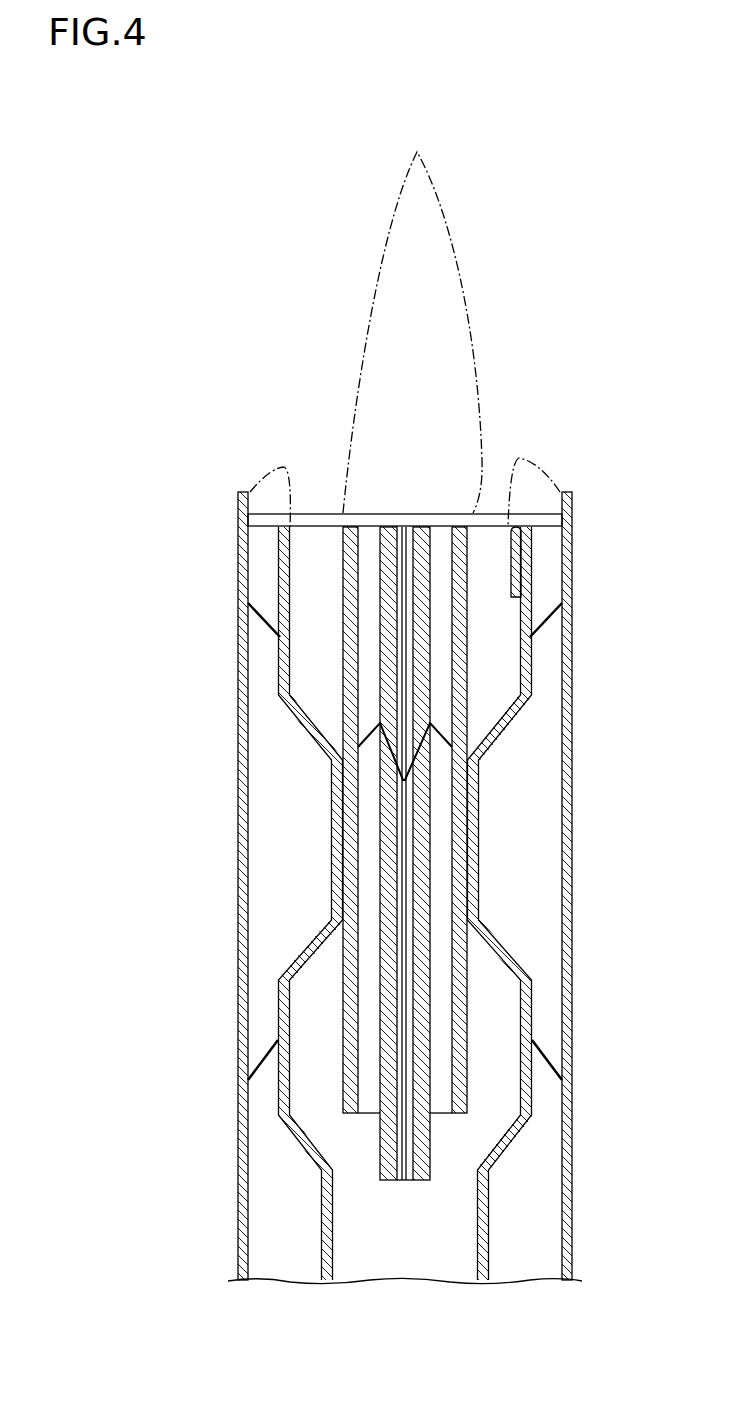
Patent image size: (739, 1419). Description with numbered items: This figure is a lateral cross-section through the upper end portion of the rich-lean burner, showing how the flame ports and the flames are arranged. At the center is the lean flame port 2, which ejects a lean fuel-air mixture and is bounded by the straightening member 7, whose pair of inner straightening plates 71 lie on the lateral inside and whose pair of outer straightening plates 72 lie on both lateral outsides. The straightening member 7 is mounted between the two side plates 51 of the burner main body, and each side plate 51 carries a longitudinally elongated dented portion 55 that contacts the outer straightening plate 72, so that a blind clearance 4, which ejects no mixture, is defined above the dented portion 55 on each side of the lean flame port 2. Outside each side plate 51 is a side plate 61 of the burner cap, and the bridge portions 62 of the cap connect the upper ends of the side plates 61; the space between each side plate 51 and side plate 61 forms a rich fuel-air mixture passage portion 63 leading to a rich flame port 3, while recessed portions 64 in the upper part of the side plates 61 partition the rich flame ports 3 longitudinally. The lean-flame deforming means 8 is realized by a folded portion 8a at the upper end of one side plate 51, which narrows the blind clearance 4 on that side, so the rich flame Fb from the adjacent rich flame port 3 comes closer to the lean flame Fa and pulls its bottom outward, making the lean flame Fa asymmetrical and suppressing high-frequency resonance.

The lean flame port 2 is at (404, 513).
The rich flame port 3 is at (262, 548).
The blind clearance 4 is at (303, 588).
The straightening member 7 is at (338, 698).
The inner straightening plate 71 is at (378, 648).
The outer straightening plate 72 is at (350, 615).
The lean-flame deforming means 8 is at (610, 562).
The folded portion 8a is at (510, 560).
The side plate of the burner main body 51 is at (277, 1068).
The dented portion 55 is at (333, 888).
The side plate of the burner cap 61 is at (240, 1100).
The bridge portion 62 is at (327, 513).
The rich fuel-air mixture passage portion 63 is at (272, 1155).
The recessed portion 64 is at (290, 832).
The lean flame Fa is at (462, 295).
The rich flame Fb is at (250, 490).